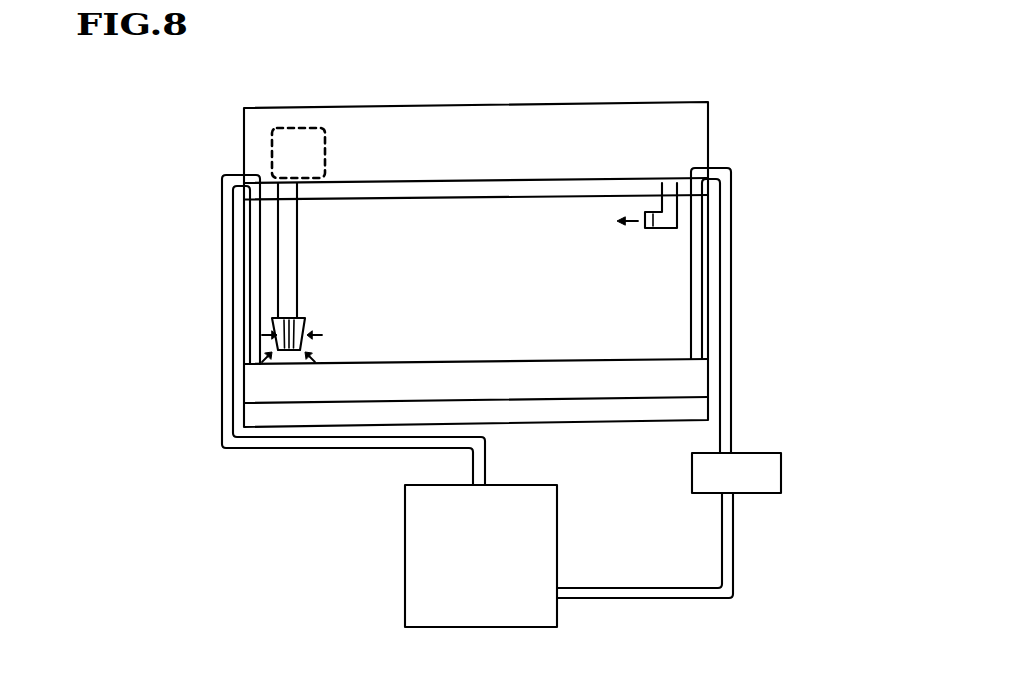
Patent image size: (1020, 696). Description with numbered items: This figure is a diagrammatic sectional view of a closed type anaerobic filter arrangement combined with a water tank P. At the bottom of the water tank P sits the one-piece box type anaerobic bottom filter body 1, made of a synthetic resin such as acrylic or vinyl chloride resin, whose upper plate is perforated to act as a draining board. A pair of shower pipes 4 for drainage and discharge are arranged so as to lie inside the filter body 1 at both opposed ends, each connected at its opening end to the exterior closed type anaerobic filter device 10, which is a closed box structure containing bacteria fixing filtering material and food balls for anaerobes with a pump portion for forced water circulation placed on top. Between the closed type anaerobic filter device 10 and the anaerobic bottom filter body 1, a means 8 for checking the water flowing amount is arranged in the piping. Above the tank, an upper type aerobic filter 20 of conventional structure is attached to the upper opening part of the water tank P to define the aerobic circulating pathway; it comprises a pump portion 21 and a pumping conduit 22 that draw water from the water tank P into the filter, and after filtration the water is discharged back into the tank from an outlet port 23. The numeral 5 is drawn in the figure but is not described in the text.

The anaerobic bottom filter body 1 is at (700, 410).
The shower pipe 4 is at (228, 367).
The bottom plate 5 is at (662, 380).
The means for checking water flowing amount 8 is at (750, 483).
The closed type anaerobic filter device 10 is at (512, 553).
The upper type aerobic filter 20 is at (655, 128).
The pump portion 21 is at (272, 147).
The pumping conduit 22 is at (283, 237).
The outlet port 23 is at (690, 247).
The water tank P is at (625, 310).